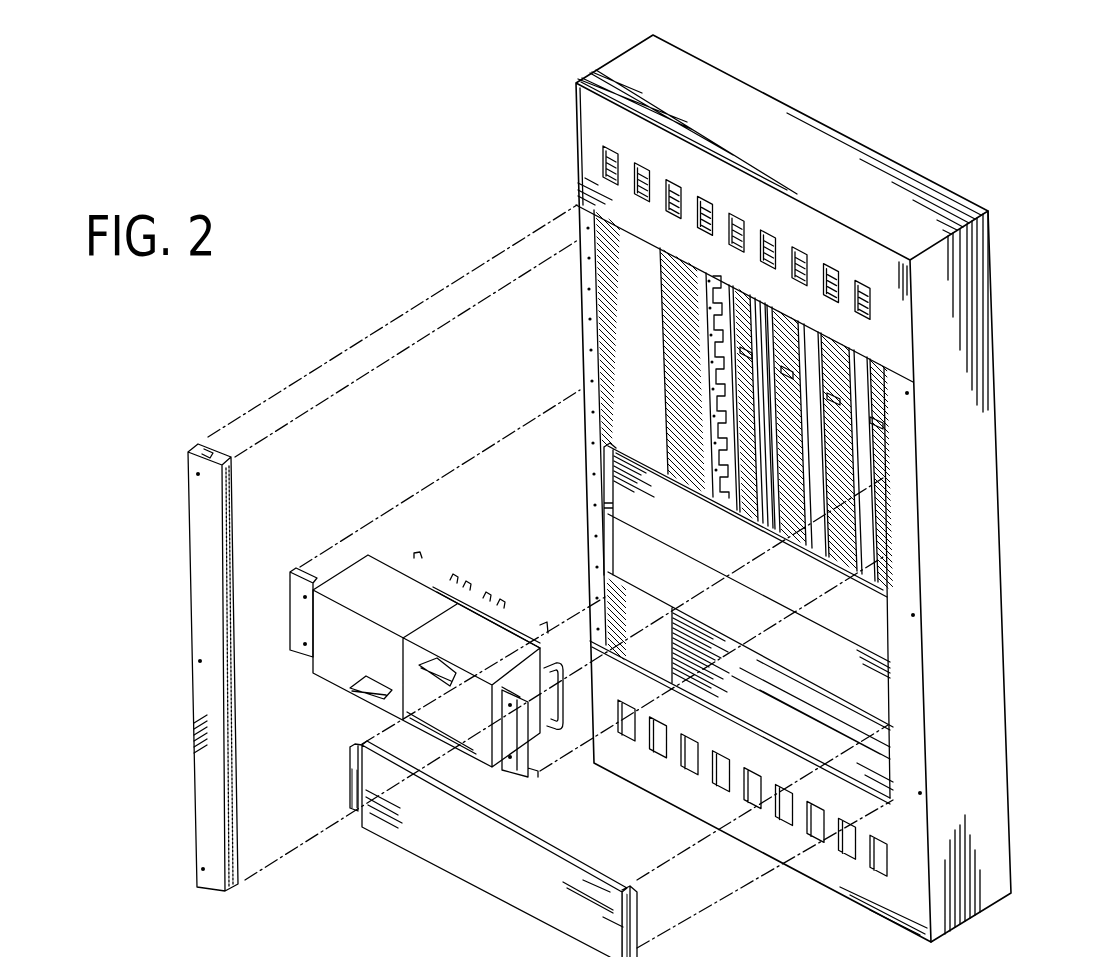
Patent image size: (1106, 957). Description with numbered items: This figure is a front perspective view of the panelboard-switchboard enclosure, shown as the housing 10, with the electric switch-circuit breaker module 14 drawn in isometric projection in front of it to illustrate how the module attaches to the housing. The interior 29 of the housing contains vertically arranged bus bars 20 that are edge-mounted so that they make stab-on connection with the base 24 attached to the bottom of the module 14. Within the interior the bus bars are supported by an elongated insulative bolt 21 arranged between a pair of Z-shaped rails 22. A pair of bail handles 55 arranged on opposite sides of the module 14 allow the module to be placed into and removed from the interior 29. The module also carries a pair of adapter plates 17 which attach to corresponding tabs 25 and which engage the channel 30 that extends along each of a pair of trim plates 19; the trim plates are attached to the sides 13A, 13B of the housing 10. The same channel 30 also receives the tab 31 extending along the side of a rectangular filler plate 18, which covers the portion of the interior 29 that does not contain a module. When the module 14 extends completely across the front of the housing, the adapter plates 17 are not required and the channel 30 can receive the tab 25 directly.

The housing 10 is at (1098, 819).
The side of the housing 13A is at (585, 338).
The side of the housing 13B is at (993, 380).
The module 14 is at (313, 697).
The adapter plates 17 is at (290, 574).
The rectangular filler plate 18 is at (507, 877).
The trim plates 19 is at (190, 597).
The bus bars 20 is at (867, 443).
The elongated insulative bolt 21 is at (790, 368).
The Z-shaped rails 22 is at (710, 400).
The base 24 is at (425, 562).
The tabs 25 is at (548, 775).
The interior 29 is at (774, 434).
The channel 30 is at (226, 508).
The tab 31 is at (351, 774).
The bail handles 55 is at (535, 697).